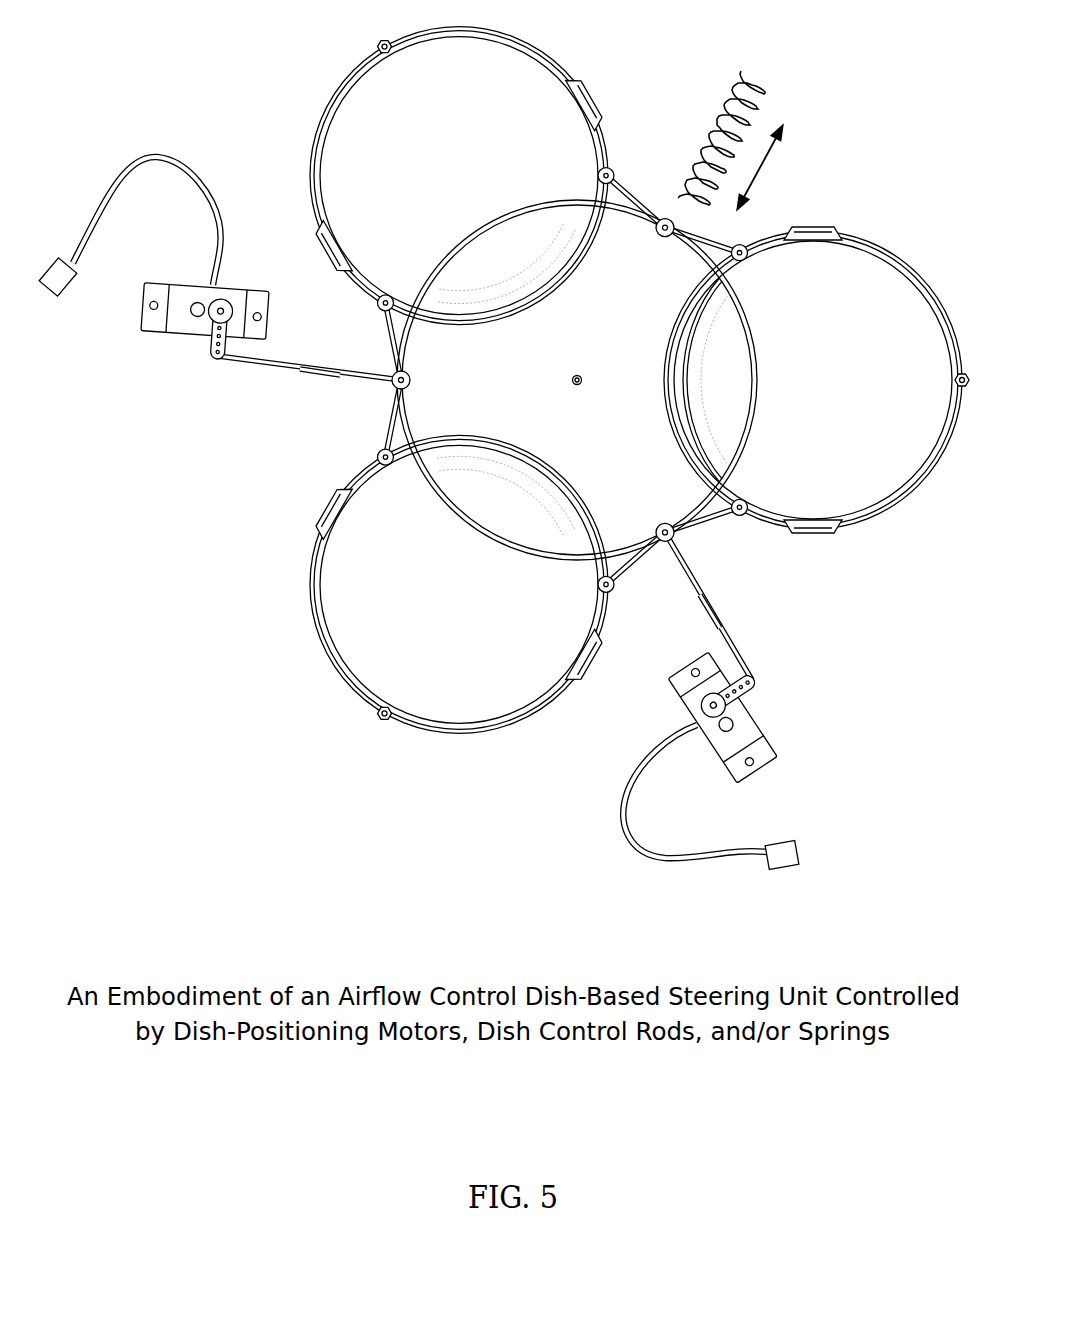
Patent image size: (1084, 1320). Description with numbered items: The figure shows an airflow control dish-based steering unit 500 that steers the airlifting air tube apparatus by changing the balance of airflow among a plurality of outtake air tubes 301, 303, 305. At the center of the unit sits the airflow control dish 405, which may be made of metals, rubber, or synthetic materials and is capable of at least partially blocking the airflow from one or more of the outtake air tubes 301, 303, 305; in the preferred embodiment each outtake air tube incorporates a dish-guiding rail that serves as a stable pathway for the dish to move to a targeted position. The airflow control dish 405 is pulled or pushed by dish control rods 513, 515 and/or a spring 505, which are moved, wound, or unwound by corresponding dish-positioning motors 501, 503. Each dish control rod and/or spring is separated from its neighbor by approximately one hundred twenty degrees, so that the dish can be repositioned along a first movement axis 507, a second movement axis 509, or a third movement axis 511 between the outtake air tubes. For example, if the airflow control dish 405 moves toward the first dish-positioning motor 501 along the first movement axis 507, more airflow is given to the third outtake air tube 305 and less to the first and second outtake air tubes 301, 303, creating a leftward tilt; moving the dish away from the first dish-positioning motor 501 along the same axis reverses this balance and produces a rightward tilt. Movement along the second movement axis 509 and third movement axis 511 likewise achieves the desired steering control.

The airflow control dish-based steering unit 500 is at (528, 1126).
The first outtake air tube 301 is at (462, 584).
The second outtake air tube 303 is at (462, 176).
The third outtake air tube 305 is at (816, 380).
The airflow control dish 405 is at (572, 380).
The first dish-positioning motor 501 is at (154, 266).
The dish-positioning motor 503 is at (720, 755).
The spring 505 is at (742, 123).
The first movement axis 507 is at (358, 397).
The second movement axis 509 is at (748, 638).
The third movement axis 511 is at (776, 167).
The dish control rod 513 is at (337, 357).
The dish control rod 515 is at (698, 603).